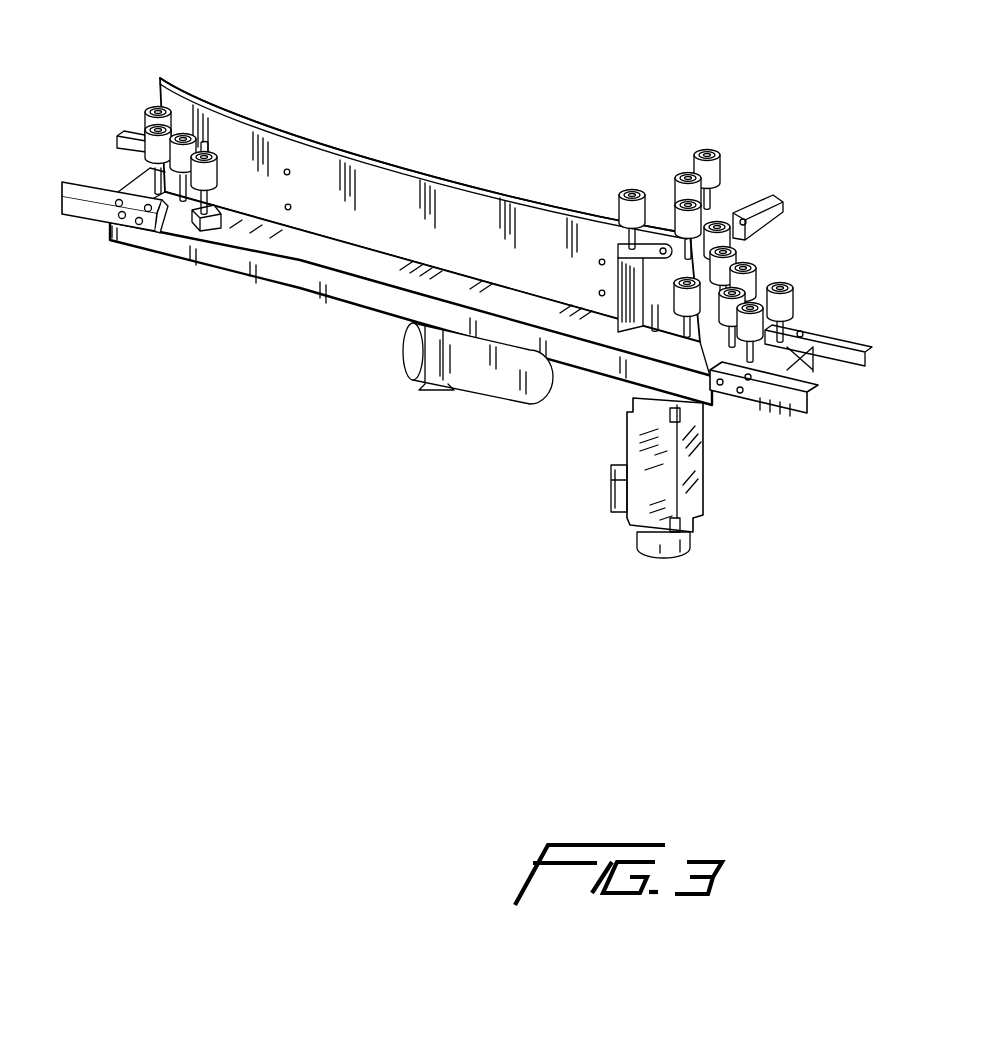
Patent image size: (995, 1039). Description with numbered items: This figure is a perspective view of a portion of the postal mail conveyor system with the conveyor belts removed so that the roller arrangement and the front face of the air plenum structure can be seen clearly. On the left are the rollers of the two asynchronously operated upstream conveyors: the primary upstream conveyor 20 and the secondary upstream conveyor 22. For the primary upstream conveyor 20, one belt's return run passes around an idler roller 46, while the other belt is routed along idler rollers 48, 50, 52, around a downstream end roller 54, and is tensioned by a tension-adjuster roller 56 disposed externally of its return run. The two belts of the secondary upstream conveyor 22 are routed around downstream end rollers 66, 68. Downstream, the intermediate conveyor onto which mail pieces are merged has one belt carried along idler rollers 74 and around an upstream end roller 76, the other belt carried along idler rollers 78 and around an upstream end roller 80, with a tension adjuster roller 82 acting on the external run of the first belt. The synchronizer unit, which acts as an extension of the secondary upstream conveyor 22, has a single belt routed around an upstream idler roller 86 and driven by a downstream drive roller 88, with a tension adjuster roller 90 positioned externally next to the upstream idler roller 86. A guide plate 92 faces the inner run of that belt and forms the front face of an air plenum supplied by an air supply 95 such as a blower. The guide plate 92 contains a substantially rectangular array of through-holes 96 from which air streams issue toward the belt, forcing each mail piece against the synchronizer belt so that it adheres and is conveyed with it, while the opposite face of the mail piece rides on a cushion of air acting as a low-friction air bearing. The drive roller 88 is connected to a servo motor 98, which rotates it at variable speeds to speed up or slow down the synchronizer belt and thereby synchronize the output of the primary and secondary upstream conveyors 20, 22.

The primary upstream conveyor 20 is at (767, 197).
The secondary upstream conveyor 22 is at (83, 207).
The idler roller 46 is at (617, 193).
The idler roller 48 is at (683, 173).
The idler roller 50 is at (678, 185).
The idler roller 52 is at (697, 150).
The downstream end roller 54 is at (753, 233).
The tension-adjuster roller 56 is at (720, 207).
The downstream end roller 66 is at (157, 108).
The downstream end roller 68 is at (150, 118).
The idler rollers 74 is at (727, 323).
The upstream end roller 76 is at (680, 307).
The idler rollers 78 is at (793, 285).
The upstream end roller 80 is at (767, 263).
The tension adjuster roller 82 is at (817, 367).
The upstream idler roller 86 is at (187, 133).
The downstream drive roller 88 is at (653, 283).
The tension adjuster roller 90 is at (210, 150).
The guide plate 92 is at (460, 207).
The air supply 95 is at (483, 375).
The through-holes 96 is at (372, 207).
The servo motor 98 is at (647, 508).